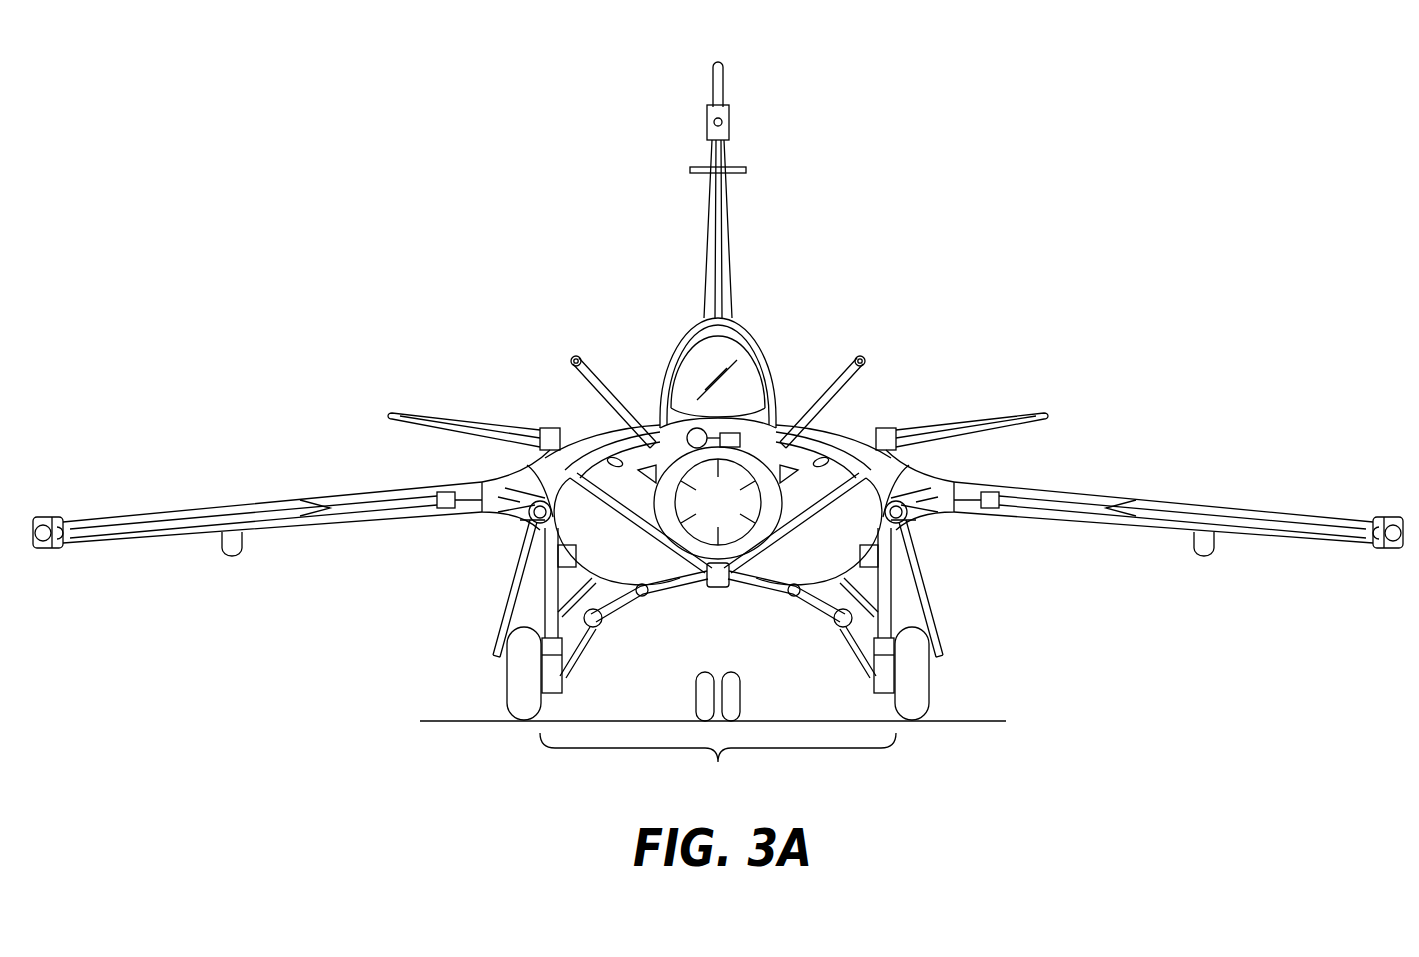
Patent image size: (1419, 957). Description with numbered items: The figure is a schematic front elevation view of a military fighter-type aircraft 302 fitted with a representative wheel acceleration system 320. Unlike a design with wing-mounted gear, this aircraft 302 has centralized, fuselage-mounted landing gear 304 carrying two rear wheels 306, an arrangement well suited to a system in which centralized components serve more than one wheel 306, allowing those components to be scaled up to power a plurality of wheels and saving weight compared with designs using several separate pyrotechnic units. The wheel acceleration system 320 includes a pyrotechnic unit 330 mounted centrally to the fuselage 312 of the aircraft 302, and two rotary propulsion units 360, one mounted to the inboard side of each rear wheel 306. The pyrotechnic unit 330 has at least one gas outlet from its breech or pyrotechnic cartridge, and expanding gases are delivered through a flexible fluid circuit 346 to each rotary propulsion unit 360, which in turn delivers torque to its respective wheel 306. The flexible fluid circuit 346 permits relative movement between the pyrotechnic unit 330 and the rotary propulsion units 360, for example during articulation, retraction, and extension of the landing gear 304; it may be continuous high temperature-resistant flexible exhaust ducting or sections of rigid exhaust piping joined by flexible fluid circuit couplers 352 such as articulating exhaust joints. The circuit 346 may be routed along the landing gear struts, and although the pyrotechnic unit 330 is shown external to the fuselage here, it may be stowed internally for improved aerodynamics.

The aircraft 302 is at (590, 288).
The landing gear 304 is at (545, 603).
The rear wheels 306 is at (507, 676).
The fuselage 312 is at (545, 540).
The wheel acceleration system 320 is at (717, 764).
The pyrotechnic unit 330 is at (716, 588).
The flexible fluid circuit 346 is at (608, 607).
The flexible fluid circuit couplers 352 is at (598, 628).
The rotary propulsion units 360 is at (562, 683).